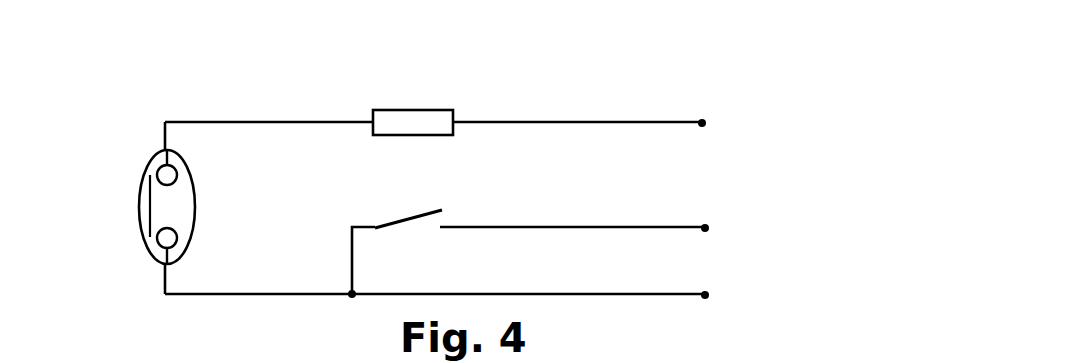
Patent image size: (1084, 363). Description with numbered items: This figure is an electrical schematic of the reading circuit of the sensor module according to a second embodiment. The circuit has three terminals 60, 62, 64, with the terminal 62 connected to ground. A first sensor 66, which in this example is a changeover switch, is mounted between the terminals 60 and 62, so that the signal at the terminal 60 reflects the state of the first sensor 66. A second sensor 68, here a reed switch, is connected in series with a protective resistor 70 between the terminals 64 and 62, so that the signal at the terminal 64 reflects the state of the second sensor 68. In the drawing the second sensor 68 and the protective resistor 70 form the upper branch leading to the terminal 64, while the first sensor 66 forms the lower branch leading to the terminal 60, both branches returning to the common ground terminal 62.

The terminal 60 is at (705, 228).
The terminal 62 is at (705, 295).
The terminal 64 is at (702, 123).
The first sensor 66 is at (407, 215).
The second sensor 68 is at (140, 183).
The protective resistor 70 is at (408, 121).